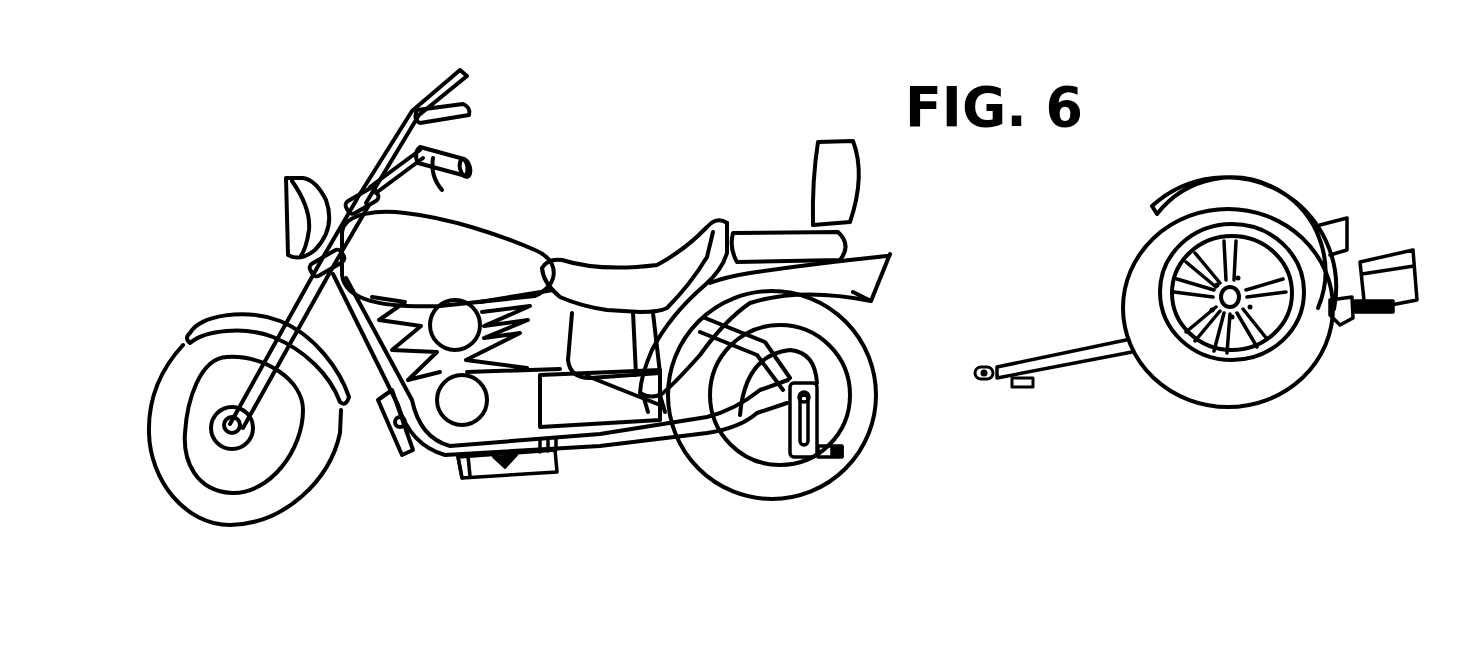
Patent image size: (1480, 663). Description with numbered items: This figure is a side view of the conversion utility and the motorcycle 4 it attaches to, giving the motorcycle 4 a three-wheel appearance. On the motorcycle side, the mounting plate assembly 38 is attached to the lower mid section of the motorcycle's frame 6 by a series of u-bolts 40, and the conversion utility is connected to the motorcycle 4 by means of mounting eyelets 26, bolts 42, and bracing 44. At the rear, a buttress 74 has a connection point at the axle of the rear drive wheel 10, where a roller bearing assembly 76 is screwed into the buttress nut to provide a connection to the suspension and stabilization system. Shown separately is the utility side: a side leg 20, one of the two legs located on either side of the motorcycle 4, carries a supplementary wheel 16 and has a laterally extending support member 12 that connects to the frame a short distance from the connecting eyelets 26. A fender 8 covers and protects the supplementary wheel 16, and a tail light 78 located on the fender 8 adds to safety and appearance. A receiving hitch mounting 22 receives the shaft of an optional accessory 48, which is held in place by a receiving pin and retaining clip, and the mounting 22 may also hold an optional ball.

The motorcycle 4 is at (627, 283).
The motorcycle's frame 6 is at (433, 450).
The fender 8 is at (1237, 176).
The rear drive wheel 10 is at (695, 463).
The laterally extending support member 12 is at (1022, 387).
The supplementary wheel 16 is at (1238, 347).
The side leg 20 is at (1060, 372).
The receiving hitch mounting 22 is at (1350, 322).
The mounting eyelet 26 is at (983, 383).
The mounting plate assembly 38 is at (485, 478).
The u-bolt 40 is at (457, 470).
The bolt 42 is at (505, 467).
The bracing 44 is at (517, 463).
The optional accessory 48 is at (1420, 302).
The buttress 74 is at (777, 457).
The roller bearing assembly 76 is at (840, 460).
The tail light 78 is at (1337, 217).